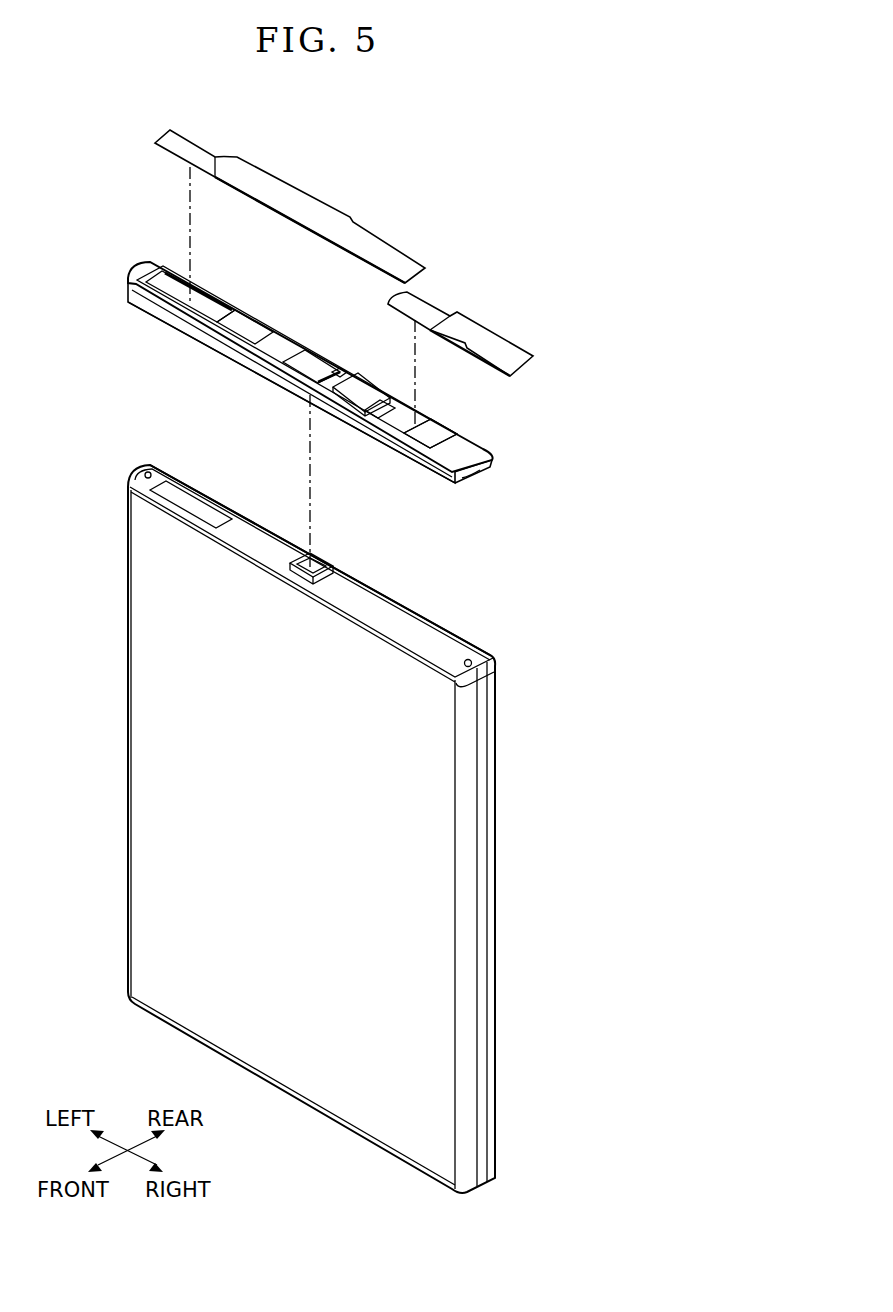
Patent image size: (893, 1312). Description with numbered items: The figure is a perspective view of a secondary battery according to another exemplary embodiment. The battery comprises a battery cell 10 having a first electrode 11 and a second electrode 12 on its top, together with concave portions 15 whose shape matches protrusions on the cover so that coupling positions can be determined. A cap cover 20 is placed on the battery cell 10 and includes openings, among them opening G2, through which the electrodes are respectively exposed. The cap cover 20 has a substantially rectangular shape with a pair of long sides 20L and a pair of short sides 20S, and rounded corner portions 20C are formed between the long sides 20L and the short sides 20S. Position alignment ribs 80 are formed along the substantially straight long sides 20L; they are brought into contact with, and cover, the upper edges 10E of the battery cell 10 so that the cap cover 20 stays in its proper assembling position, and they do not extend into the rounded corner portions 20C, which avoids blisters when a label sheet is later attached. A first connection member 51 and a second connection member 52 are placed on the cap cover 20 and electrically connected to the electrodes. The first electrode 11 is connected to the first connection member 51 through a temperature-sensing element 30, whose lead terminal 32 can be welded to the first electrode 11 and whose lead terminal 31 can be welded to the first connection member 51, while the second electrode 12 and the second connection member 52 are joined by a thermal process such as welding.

The battery cell 10 is at (485, 915).
The upper edges 10E is at (445, 585).
The first electrode 11 is at (320, 560).
The second electrode 12 is at (195, 498).
The concave portions 15 is at (472, 663).
The cap cover 20 is at (470, 442).
The corner portions 20C is at (467, 472).
The short sides 20S is at (488, 468).
The long sides 20L is at (425, 418).
The temperature-sensing element 30 is at (365, 385).
The lead terminal 31 is at (405, 425).
The lead terminal 32 is at (305, 368).
The first connection member 51 is at (485, 340).
The second connection member 52 is at (288, 190).
The position alignment ribs 80 is at (418, 468).
The opening G2 is at (200, 300).